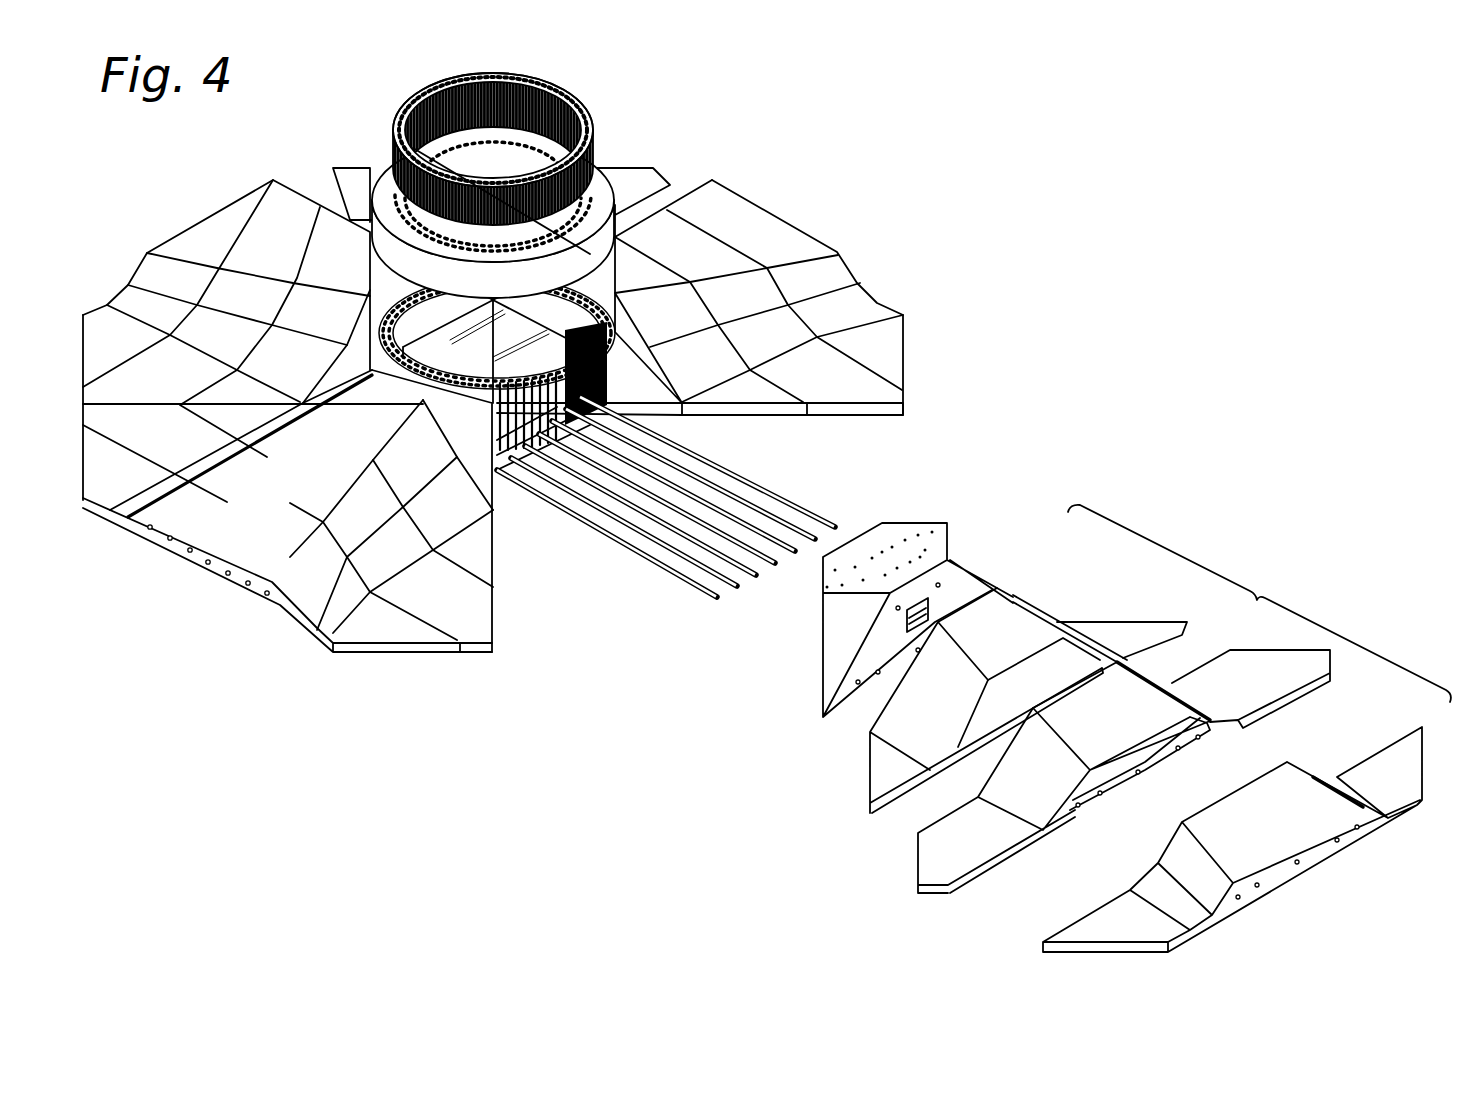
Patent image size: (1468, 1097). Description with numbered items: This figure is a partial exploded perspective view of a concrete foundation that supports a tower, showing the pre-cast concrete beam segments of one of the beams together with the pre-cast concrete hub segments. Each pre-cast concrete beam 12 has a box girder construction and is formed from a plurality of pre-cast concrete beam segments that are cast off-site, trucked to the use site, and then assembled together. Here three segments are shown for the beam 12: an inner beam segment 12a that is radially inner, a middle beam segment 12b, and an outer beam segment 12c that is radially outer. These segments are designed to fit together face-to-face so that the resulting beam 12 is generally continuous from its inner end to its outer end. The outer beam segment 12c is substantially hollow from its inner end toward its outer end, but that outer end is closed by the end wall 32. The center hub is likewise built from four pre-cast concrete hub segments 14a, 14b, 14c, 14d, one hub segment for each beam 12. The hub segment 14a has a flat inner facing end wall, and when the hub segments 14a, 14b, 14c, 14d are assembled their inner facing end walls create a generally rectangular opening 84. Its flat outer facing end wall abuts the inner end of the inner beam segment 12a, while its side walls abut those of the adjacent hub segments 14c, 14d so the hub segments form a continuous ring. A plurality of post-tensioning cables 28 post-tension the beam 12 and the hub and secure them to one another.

The pre-cast concrete beam 12 is at (1262, 596).
The inner beam segment 12a is at (1063, 607).
The middle beam segment 12b is at (1177, 674).
The outer beam segment 12c is at (1324, 762).
The hub segment 14a is at (948, 510).
The hub segment 14b is at (462, 437).
The hub segment 14c is at (370, 277).
The hub segment 14d is at (616, 278).
The post-tensioning cables 28 is at (692, 624).
The end wall 32 is at (1275, 873).
The rectangular opening 84 is at (616, 270).